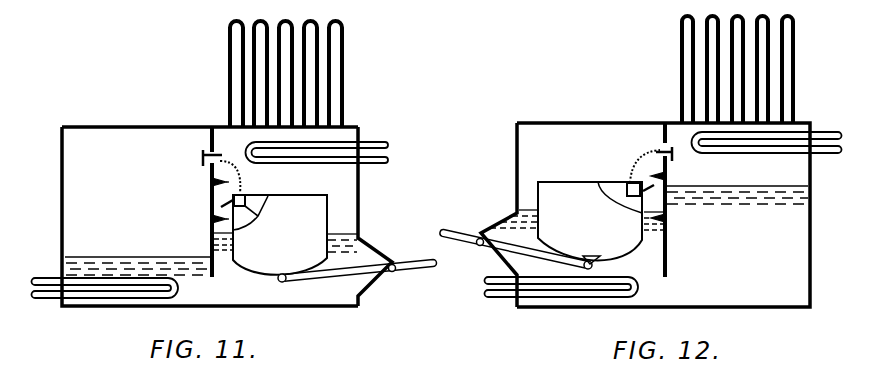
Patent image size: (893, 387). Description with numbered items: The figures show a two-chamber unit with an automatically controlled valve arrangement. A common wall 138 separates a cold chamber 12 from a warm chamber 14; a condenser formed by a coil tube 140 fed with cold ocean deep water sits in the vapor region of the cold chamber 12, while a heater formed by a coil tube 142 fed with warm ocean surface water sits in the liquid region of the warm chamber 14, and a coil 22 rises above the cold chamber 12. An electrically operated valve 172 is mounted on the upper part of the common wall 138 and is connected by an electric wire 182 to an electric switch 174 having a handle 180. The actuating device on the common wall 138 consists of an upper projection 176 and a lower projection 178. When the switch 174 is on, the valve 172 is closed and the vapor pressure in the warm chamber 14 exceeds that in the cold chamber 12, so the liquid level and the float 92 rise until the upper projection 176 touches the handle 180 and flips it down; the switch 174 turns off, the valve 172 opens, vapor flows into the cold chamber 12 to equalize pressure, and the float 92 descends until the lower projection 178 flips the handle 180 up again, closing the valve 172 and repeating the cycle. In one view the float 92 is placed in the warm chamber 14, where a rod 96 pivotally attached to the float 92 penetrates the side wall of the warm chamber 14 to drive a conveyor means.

In FIG. 11, the cold chamber 12 is at (344, 184).
In FIG. 12, the cold chamber 12 is at (749, 176).
In FIG. 11, the warm chamber 14 is at (94, 163).
In FIG. 12, the warm chamber 14 is at (559, 153).
In FIG. 11, the heat exchange coil 22 is at (355, 53).
In FIG. 12, the heat exchange coil 22 is at (809, 42).
In FIG. 11, the float 92 is at (320, 208).
In FIG. 12, the float 92 is at (568, 187).
In FIG. 11, the rod 96 is at (414, 272).
In FIG. 12, the rod 96 is at (456, 234).
In FIG. 11, the common wall 138 is at (212, 241).
In FIG. 11, the coil tube 140 is at (363, 143).
In FIG. 12, the coil tube 140 is at (830, 133).
In FIG. 11, the coil tube 142 is at (80, 296).
In FIG. 12, the coil tube 142 is at (540, 296).
In FIG. 11, the electrically operated valve 172 is at (203, 154).
In FIG. 11, the electric switch 174 is at (260, 210).
In FIG. 11, the upper projection 176 is at (212, 179).
In FIG. 11, the lower projection 178 is at (212, 217).
In FIG. 11, the handle 180 is at (220, 206).
In FIG. 11, the electric wire 182 is at (251, 177).